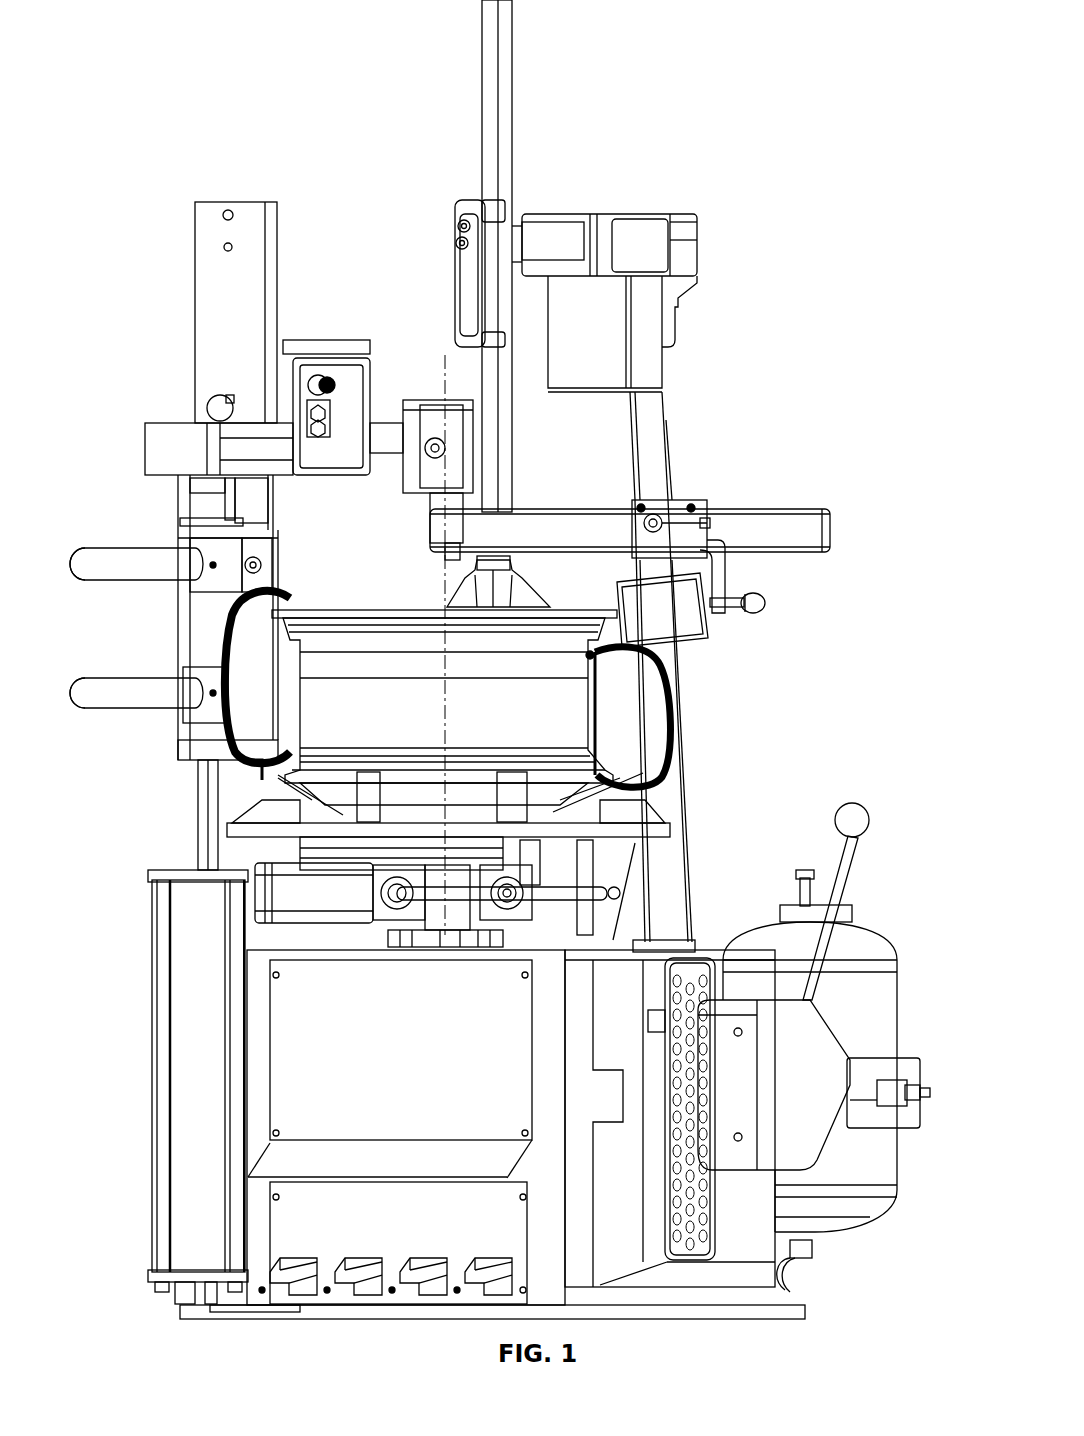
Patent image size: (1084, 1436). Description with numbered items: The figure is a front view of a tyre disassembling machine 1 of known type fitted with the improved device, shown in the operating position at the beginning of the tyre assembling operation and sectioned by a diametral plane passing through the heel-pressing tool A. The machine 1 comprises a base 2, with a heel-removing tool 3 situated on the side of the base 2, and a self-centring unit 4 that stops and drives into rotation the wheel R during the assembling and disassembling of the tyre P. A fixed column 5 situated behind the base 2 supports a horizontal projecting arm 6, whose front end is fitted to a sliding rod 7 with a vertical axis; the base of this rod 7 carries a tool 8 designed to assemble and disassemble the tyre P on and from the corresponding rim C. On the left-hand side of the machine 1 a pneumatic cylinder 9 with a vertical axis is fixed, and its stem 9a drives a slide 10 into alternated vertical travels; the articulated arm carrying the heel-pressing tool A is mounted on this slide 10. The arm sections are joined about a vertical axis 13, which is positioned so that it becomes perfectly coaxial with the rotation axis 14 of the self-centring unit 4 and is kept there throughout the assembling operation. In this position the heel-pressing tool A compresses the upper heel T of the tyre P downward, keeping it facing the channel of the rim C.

The tyre disassembling machine 1 is at (722, 281).
The base 2 is at (312, 1050).
The heel-removing tool 3 is at (810, 1055).
The self-centring unit 4 is at (620, 815).
The fixed column 5 is at (648, 455).
The horizontal projecting arm 6 is at (630, 236).
The sliding rod 7 is at (510, 63).
The tool 8 is at (520, 576).
The pneumatic cylinder 9 is at (202, 1011).
The stem 9a is at (215, 776).
The slide 10 is at (190, 640).
The axis 13 is at (446, 396).
The rotation axis 14 is at (441, 591).
The wheel R is at (365, 600).
The rim C is at (272, 682).
The upper heel T is at (590, 658).
The tyre P is at (642, 718).
The heel-pressing tool A is at (717, 628).